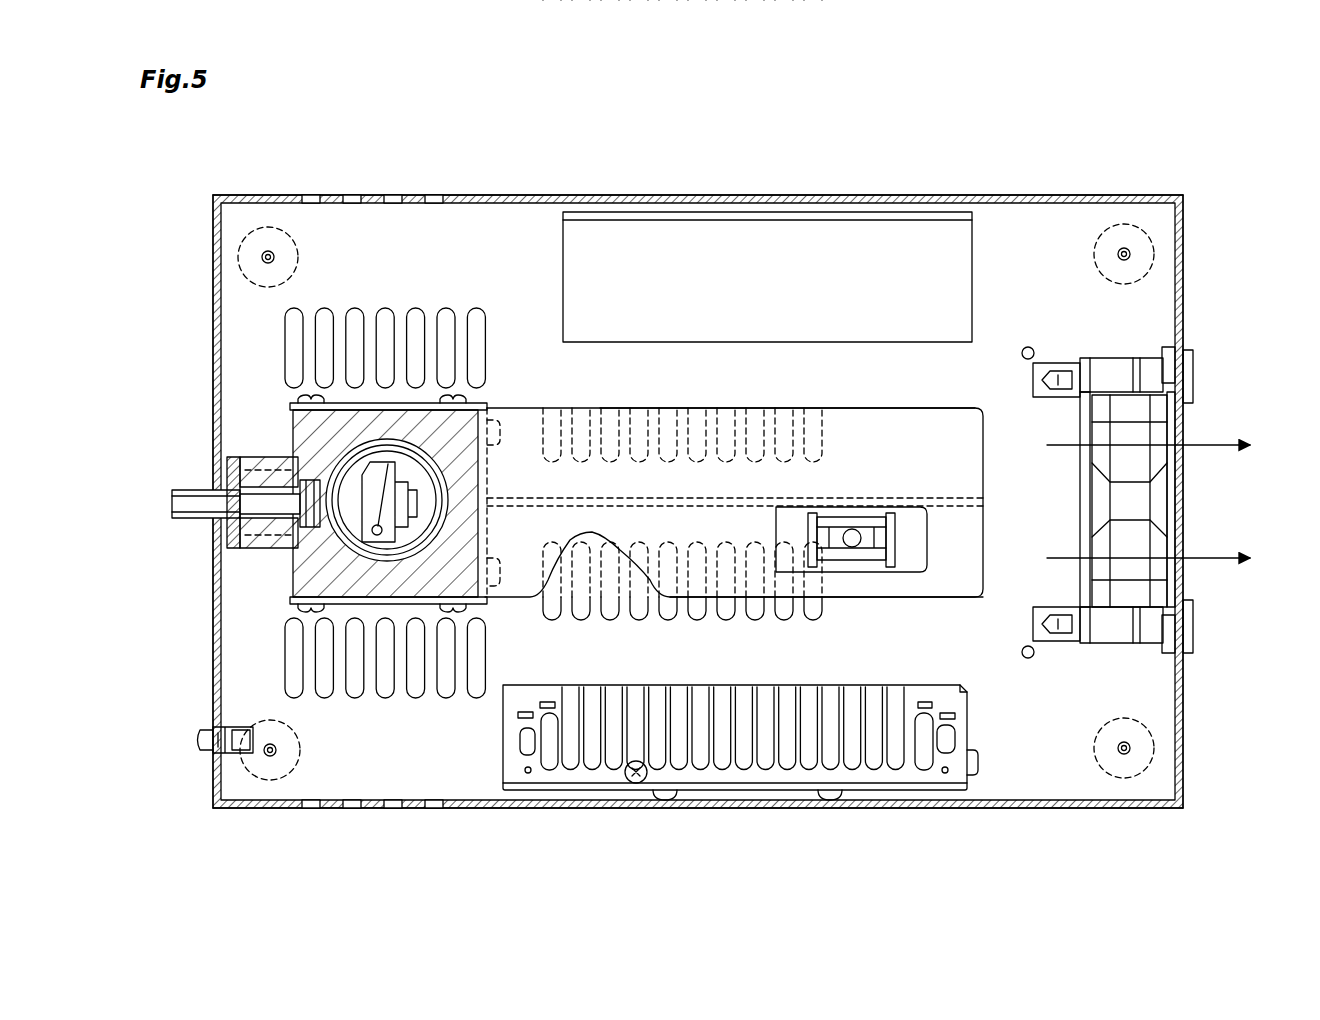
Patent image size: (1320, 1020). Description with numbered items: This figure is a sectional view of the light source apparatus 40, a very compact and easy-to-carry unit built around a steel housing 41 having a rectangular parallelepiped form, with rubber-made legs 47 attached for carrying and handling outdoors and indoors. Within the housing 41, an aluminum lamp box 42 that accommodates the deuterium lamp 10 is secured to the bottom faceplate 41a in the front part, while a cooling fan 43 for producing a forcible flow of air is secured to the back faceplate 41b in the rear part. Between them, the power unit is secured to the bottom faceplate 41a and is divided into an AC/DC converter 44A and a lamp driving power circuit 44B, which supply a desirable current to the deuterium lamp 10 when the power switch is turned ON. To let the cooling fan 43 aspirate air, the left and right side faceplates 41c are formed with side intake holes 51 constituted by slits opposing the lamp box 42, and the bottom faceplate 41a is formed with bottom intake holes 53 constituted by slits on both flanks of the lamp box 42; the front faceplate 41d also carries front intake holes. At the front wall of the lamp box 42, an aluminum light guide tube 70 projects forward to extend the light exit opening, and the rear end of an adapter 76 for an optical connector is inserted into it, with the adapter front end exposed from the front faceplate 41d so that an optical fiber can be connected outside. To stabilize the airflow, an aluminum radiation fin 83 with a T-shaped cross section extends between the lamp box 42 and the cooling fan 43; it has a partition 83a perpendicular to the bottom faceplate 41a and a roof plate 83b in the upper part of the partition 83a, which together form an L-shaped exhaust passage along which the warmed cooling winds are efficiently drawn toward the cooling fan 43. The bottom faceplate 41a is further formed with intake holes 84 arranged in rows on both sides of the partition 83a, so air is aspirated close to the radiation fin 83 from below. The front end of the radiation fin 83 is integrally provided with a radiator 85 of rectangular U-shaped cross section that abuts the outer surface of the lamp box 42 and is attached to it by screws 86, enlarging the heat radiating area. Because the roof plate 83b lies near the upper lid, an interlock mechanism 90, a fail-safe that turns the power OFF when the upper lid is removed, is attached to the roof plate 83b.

The light source apparatus 40 is at (1082, 160).
The housing 41 is at (1186, 738).
The bottom faceplate 41a is at (322, 763).
The back faceplate 41b is at (1183, 328).
The side faceplate 41c is at (835, 196).
The front faceplate 41d is at (213, 680).
The lamp box 42 is at (478, 415).
The cooling fan 43 is at (1140, 440).
The AC/DC converter 44A is at (624, 762).
The lamp driving power circuit 44B is at (712, 232).
The rubber-made legs 47 is at (240, 257).
The side intake holes 51 is at (311, 194).
The bottom intake holes 53 is at (360, 315).
The light guide tube 70 is at (260, 545).
The adapter 76 is at (195, 492).
The radiation fin 83 is at (985, 540).
The partition 83a is at (760, 498).
The roof plate 83b is at (873, 410).
The intake holes 84 is at (608, 390).
The radiator 85 is at (375, 600).
The screws 86 is at (300, 403).
The interlock mechanism 90 is at (880, 560).
The deuterium lamp 10 is at (440, 490).